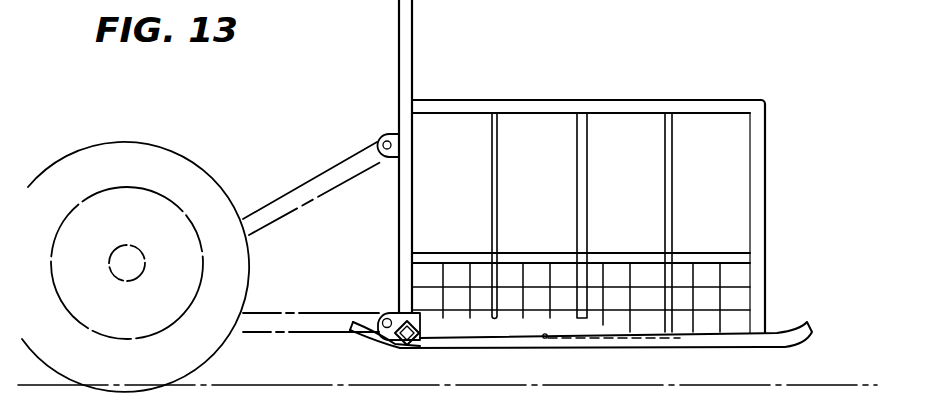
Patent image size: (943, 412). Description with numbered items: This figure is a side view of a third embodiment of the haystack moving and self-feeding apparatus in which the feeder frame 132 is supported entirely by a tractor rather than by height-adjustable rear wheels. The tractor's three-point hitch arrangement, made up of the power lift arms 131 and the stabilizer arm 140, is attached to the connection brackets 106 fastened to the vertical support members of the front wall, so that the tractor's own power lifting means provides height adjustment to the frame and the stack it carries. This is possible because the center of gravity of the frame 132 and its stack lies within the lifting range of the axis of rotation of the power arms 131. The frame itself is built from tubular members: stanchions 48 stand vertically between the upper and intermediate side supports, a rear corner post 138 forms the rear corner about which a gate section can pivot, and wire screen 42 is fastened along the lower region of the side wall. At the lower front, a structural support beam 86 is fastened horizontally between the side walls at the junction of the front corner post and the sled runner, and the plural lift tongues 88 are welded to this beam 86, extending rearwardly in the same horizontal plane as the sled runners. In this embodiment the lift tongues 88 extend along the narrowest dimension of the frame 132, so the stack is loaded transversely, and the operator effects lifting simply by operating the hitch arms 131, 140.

The stabilizer arm 140 is at (297, 187).
The power lift arms 131 is at (248, 333).
The connection brackets 106 is at (390, 134).
The feeder frame 132 is at (610, 86).
The stanchions 48 is at (497, 197).
The rear corner post 138 is at (757, 158).
The wire screen 42 is at (722, 298).
The lift tongues 88 is at (510, 346).
The structural support beam 86 is at (412, 346).